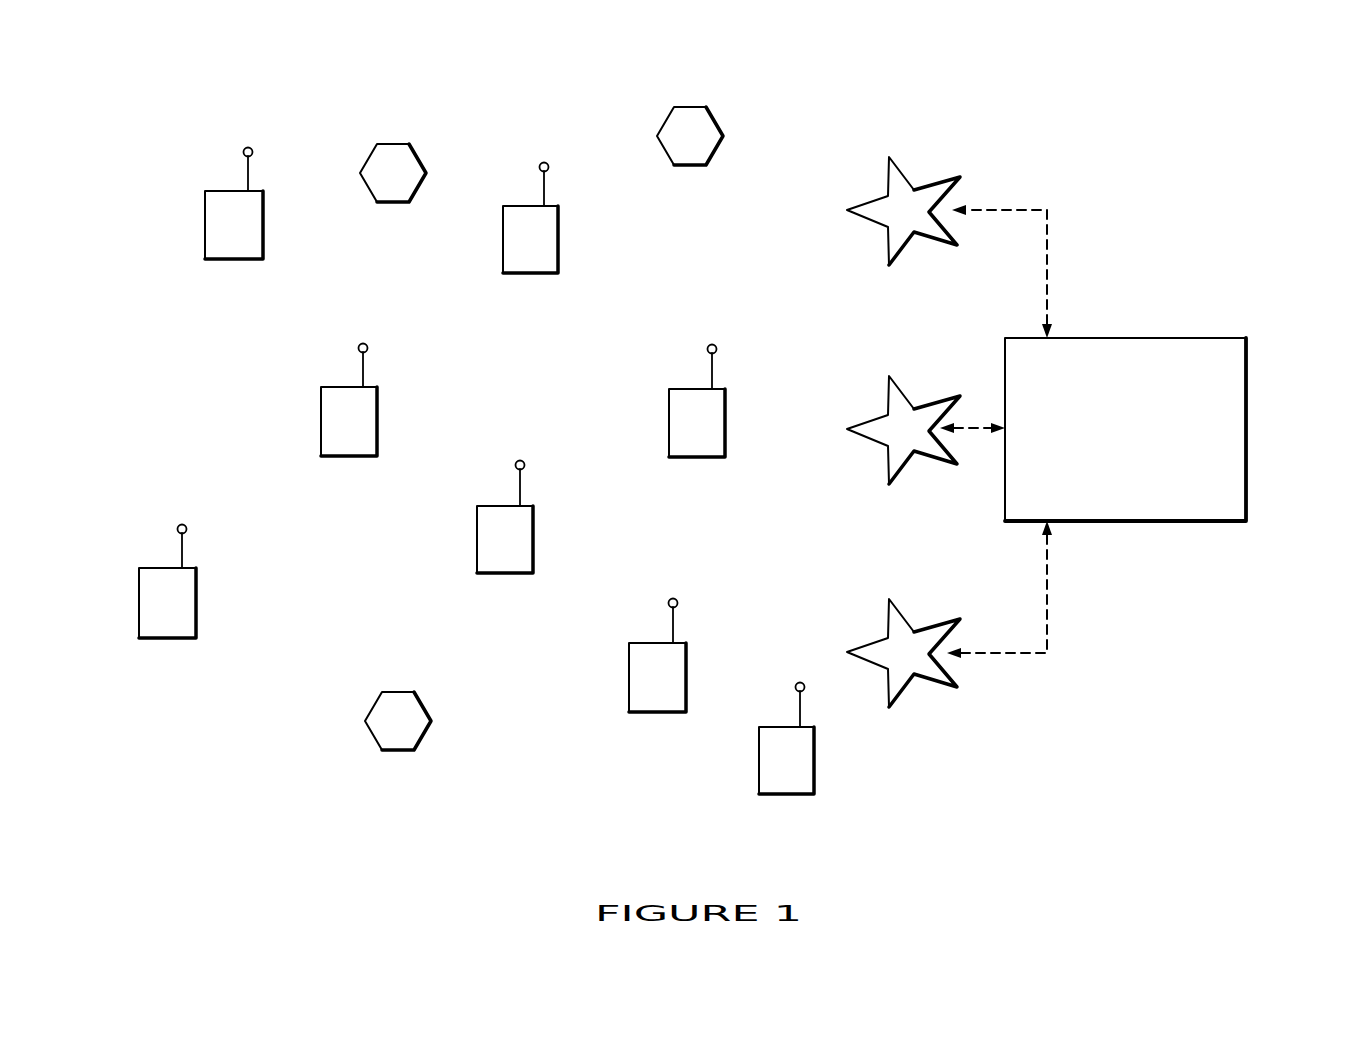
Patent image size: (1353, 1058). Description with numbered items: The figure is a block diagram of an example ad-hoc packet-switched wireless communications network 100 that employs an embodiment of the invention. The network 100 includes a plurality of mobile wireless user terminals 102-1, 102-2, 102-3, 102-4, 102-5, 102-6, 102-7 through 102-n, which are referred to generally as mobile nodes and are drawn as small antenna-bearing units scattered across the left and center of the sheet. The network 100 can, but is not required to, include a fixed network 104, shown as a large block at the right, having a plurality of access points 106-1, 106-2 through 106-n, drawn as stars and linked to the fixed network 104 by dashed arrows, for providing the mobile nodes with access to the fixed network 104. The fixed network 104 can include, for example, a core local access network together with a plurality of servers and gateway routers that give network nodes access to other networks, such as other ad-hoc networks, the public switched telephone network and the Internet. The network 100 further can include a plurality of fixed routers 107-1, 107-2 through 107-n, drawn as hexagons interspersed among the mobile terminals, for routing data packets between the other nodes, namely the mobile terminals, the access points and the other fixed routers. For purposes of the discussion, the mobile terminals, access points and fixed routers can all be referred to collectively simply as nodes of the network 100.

The ad-hoc packet-switched wireless communications network 100 is at (1083, 152).
The mobile wireless user terminal 102-1 is at (168, 638).
The mobile wireless user terminal 102-2 is at (350, 456).
The mobile wireless user terminal 102-3 is at (506, 573).
The mobile wireless user terminal 102-4 is at (658, 712).
The mobile wireless user terminal 102-5 is at (698, 457).
The mobile wireless user terminal 102-6 is at (235, 259).
The mobile wireless user terminal 102-7 is at (531, 273).
The mobile wireless user terminal 102-n is at (787, 794).
The fixed network 104 is at (1165, 521).
The access point 106-1 is at (915, 240).
The access point 106-2 is at (915, 459).
The access point 106-n is at (915, 682).
The fixed router 107-1 is at (390, 202).
The fixed router 107-2 is at (395, 750).
The fixed router 107-n is at (690, 165).